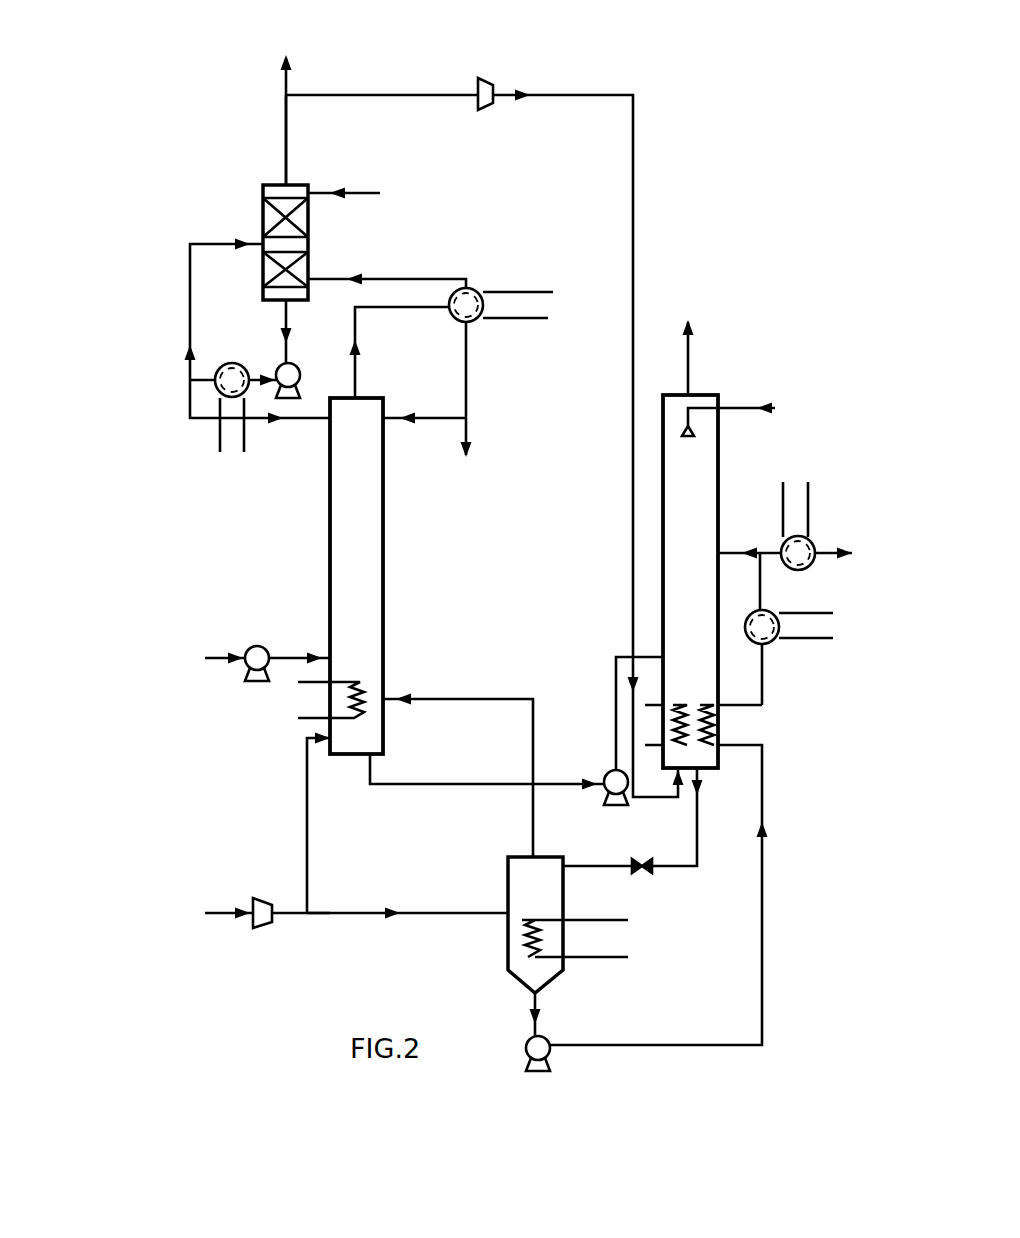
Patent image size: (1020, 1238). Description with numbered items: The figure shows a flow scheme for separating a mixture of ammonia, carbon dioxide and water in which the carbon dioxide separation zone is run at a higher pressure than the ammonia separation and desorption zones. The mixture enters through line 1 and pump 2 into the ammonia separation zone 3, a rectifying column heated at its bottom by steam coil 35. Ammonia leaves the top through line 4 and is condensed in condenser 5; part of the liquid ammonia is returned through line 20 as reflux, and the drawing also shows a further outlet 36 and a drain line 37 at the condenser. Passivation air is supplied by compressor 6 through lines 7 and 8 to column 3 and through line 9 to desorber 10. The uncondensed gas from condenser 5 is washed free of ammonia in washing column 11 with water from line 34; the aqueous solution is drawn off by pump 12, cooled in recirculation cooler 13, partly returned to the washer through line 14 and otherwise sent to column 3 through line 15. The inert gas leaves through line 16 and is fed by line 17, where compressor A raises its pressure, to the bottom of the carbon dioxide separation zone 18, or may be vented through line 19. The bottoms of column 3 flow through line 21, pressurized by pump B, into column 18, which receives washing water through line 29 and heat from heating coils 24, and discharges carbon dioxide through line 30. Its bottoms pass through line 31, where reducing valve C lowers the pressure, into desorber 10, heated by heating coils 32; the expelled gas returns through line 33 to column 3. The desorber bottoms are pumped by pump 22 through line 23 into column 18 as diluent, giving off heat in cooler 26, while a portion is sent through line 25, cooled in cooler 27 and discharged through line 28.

The line 1 is at (245, 656).
The pump 2 is at (255, 681).
The ammonia separation zone 3 is at (330, 548).
The line 4 is at (421, 308).
The condenser 5 is at (472, 290).
The compressor 6 is at (262, 898).
The line 7 is at (302, 913).
The line 8 is at (307, 792).
The line 9 is at (345, 913).
The desorber 10 is at (563, 893).
The washing column 11 is at (263, 263).
The pump 12 is at (282, 366).
The recirculation cooler 13 is at (232, 362).
The line 14 is at (190, 292).
The line 15 is at (230, 418).
The line 16 is at (285, 130).
The line 17 is at (405, 95).
The carbon dioxide separation zone 18 is at (718, 458).
The line 19 is at (283, 78).
The line 20 is at (400, 418).
The line 21 is at (403, 784).
The pump 22 is at (547, 1038).
The line 23 is at (763, 770).
The heating coils 24 is at (663, 705).
The line 25 is at (760, 597).
The cooler 26 is at (772, 640).
The cooler 27 is at (790, 565).
The line 28 is at (818, 558).
The line 29 is at (735, 410).
The line 30 is at (688, 360).
The line 31 is at (604, 866).
The heating coils 32 is at (575, 938).
The line 33 is at (407, 698).
The line 34 is at (376, 193).
The steam coil 35 is at (312, 682).
The liquid outlet line 36 is at (390, 279).
The drain line 37 is at (467, 425).
The compressor A is at (483, 78).
The pump B is at (633, 749).
The reducing valve C is at (642, 873).